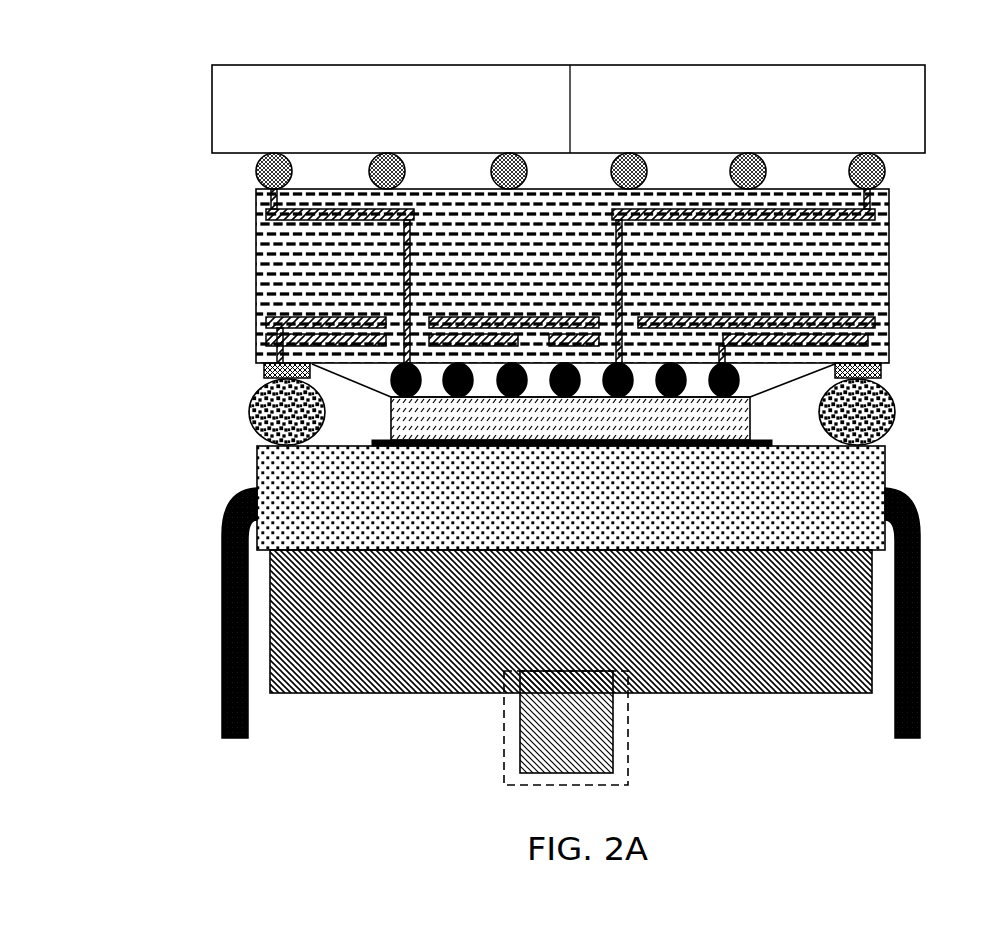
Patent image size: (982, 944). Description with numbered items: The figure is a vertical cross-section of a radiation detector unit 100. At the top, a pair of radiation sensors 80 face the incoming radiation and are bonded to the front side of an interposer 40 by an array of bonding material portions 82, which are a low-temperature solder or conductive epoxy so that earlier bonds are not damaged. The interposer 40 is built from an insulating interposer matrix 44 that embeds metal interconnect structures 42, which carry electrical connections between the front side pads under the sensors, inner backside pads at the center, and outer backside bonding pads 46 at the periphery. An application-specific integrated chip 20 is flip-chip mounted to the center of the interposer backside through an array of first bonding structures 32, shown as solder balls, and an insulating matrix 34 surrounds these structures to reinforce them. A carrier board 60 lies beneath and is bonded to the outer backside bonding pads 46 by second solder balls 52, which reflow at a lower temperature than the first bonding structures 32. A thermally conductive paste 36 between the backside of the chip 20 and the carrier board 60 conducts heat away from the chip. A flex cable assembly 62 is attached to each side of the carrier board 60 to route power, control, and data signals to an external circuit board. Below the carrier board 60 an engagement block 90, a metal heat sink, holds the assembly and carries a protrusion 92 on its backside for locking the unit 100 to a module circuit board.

The radiation detector unit 100 is at (150, 115).
The radiation sensor 80 is at (405, 117).
The bonding material portions 82 is at (884, 165).
The interposer 40 is at (616, 275).
The insulating interposer matrix 44 is at (570, 277).
The metal interconnect structures 42 is at (622, 252).
The outer backside bonding pads 46 is at (881, 372).
The second solder balls 52 is at (869, 424).
The first bonding structures 32 is at (737, 382).
The application-specific integrated chip 20 is at (574, 432).
The insulating matrix 34 is at (648, 388).
The thermally conductive paste 36 is at (720, 447).
The carrier board 60 is at (582, 509).
The flex cable assembly 62 is at (920, 575).
The engagement block 90 is at (582, 634).
The protrusion 92 is at (628, 740).